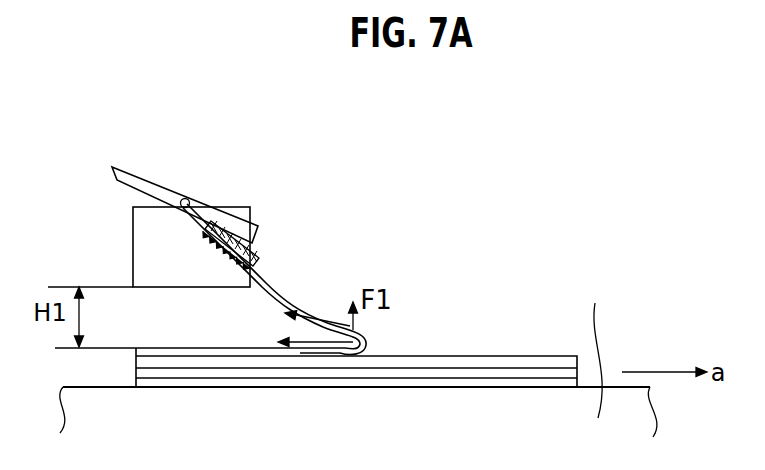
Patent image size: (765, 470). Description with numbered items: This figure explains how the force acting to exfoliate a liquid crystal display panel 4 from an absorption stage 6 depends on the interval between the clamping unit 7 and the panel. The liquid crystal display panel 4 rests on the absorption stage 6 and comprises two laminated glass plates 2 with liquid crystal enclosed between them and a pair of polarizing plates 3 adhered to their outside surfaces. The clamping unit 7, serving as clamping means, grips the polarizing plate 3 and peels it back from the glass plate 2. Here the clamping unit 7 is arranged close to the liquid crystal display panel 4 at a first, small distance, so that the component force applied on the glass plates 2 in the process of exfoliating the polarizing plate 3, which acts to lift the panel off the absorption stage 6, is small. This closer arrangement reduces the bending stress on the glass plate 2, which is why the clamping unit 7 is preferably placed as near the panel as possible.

The clamping unit 7 is at (199, 173).
The polarizing plate 3 is at (303, 308).
The liquid crystal display panel 4 is at (483, 323).
The glass plate 2 is at (437, 358).
The absorption stage 6 is at (597, 346).